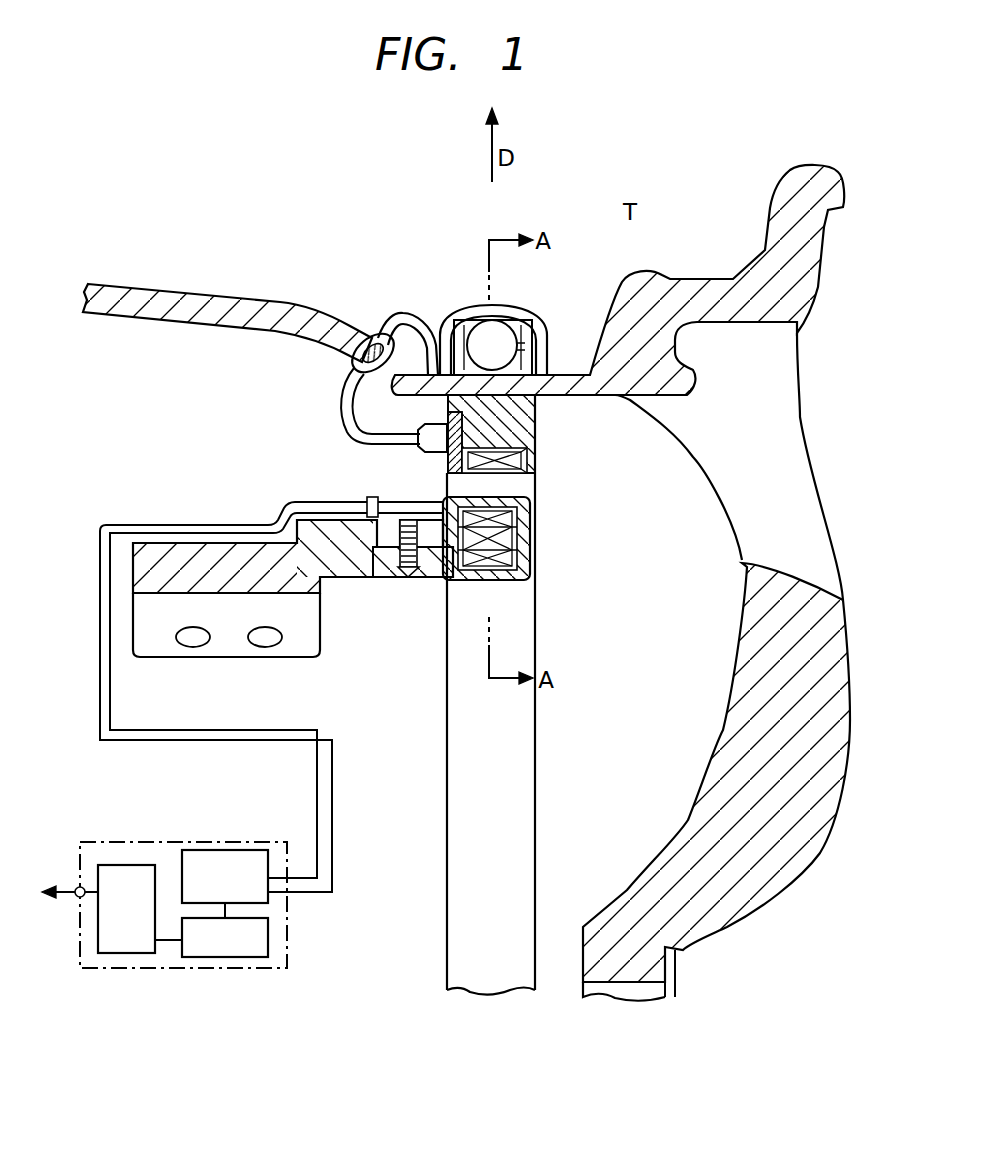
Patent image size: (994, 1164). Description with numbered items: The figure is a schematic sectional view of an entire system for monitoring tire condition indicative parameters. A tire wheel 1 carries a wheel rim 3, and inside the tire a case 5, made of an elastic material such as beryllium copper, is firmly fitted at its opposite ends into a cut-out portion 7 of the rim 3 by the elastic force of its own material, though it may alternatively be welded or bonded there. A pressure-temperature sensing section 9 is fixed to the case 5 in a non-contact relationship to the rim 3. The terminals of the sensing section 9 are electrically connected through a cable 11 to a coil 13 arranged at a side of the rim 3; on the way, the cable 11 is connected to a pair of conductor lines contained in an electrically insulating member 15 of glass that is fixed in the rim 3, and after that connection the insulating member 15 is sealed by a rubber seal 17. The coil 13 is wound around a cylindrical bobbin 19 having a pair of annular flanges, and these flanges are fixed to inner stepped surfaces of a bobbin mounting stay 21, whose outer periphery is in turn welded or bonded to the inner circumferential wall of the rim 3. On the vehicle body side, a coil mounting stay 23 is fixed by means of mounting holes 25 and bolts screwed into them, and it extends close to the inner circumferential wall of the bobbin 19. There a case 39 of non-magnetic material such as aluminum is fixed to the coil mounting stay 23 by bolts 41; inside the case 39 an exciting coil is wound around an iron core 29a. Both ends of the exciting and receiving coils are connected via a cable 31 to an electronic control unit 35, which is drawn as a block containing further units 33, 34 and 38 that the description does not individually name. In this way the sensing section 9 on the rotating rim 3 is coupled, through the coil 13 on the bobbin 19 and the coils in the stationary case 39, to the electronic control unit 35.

The tire wheel 1 is at (778, 865).
The wheel rim 3 is at (204, 305).
The case 5 is at (547, 326).
The cut-out portion 7 is at (430, 335).
The pressure-temperature sensing section 9 is at (488, 334).
The cable 11 is at (403, 313).
The coil 13 is at (527, 460).
The electrically insulating member 15 is at (352, 332).
The rubber seal 17 is at (381, 333).
The bobbin 19 is at (455, 461).
The bobbin mounting stay 21 is at (512, 428).
The coil mounting stay 23 is at (190, 658).
The mounting holes 25 is at (265, 642).
The iron core 29a is at (528, 533).
The cable 31 is at (263, 522).
The control unit 33 is at (247, 850).
The evaluation unit 34 is at (268, 940).
The electronic control unit 35 is at (211, 842).
The output unit 38 is at (138, 866).
The case 39 is at (438, 576).
The bolts 41 is at (403, 578).